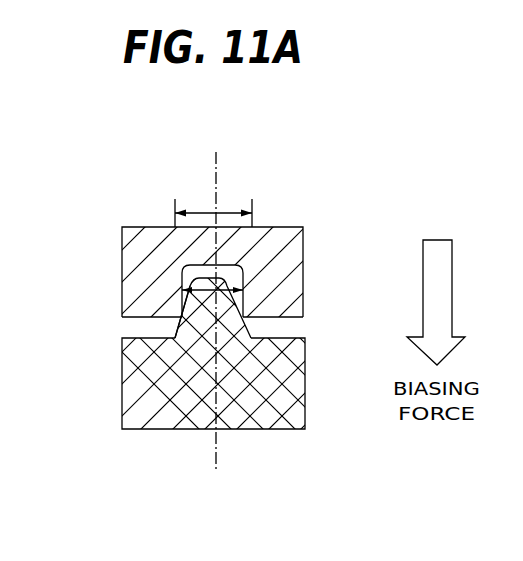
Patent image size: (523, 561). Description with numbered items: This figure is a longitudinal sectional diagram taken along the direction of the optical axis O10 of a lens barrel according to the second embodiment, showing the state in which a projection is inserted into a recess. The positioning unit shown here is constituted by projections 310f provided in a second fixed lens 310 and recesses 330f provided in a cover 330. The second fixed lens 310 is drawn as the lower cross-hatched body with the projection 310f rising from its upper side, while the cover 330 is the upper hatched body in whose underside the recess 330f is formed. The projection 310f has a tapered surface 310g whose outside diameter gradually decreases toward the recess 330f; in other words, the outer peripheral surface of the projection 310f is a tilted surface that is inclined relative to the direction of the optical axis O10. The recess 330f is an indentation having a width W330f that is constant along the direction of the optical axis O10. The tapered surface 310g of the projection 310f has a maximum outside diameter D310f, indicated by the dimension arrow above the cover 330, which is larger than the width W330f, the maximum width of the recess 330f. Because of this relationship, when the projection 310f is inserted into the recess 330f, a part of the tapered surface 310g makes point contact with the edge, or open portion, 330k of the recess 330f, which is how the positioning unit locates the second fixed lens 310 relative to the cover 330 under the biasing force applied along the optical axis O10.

The cover 330 is at (152, 258).
The edge of the recess 330k is at (178, 317).
The recess 330f is at (252, 227).
The width of the recess W330f is at (236, 266).
The second fixed lens 310 is at (193, 410).
The projection 310f is at (213, 283).
The tapered surface 310g is at (178, 330).
The maximum outside diameter of the tapered surface D310f is at (203, 212).
The optical axis O10 is at (217, 162).